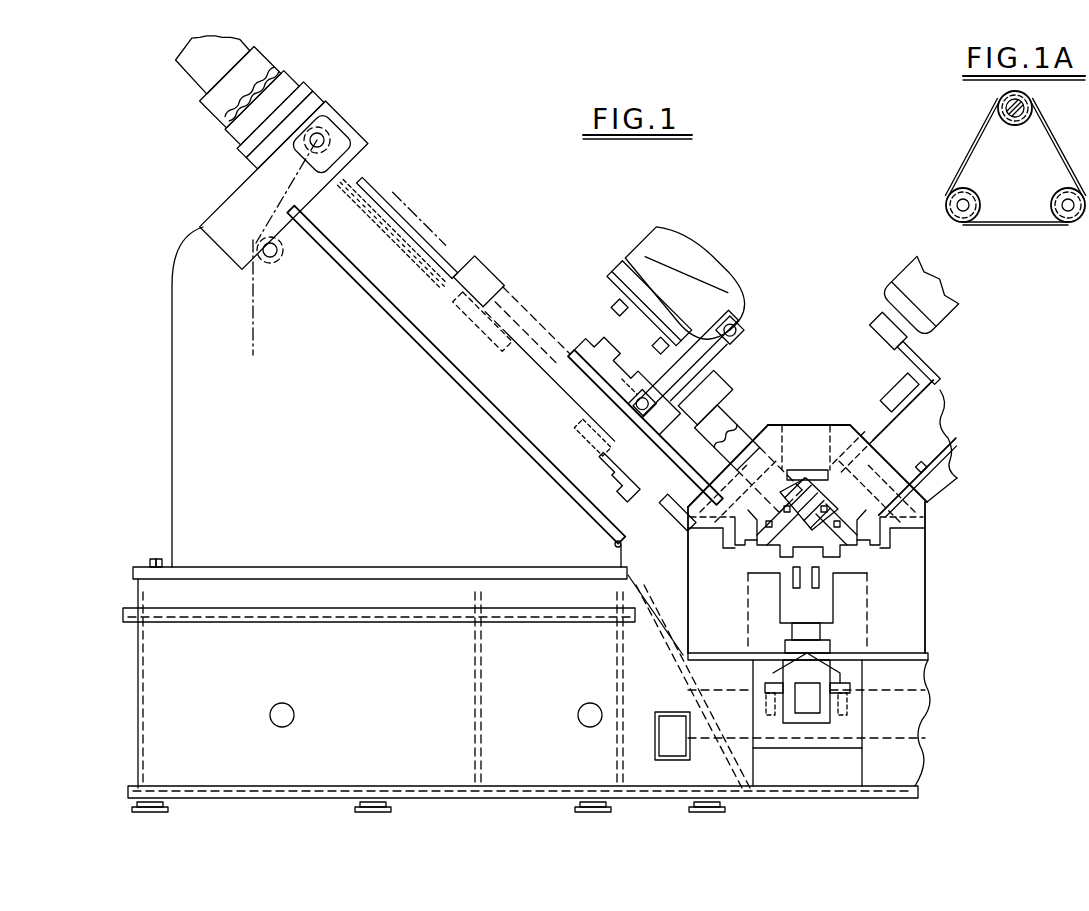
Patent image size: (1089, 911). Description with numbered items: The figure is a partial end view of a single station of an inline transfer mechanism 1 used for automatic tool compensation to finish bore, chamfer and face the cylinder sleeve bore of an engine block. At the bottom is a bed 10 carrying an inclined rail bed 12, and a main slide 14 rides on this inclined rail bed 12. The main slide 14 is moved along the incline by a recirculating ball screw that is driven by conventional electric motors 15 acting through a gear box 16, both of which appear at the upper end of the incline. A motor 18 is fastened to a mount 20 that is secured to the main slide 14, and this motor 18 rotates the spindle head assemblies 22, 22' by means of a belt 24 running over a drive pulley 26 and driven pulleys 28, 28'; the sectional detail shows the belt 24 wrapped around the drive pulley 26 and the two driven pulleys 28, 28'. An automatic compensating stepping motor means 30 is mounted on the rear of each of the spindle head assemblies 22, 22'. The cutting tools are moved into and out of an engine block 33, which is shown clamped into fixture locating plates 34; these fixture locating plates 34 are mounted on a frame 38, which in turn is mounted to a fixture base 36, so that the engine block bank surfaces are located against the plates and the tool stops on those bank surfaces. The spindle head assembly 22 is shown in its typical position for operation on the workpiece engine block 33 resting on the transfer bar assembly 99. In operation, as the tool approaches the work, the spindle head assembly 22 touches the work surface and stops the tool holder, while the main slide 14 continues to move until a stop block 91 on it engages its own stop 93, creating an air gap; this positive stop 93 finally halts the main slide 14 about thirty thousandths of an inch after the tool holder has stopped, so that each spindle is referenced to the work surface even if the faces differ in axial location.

In FIG. 1, the machine 1 is at (493, 346).
In FIG. 1, the bed 10 is at (935, 735).
In FIG. 1, the inclined rail bed 12 is at (410, 279).
In FIG. 1, the main slide 14 is at (490, 290).
In FIG. 1, the electric motors 15 is at (200, 70).
In FIG. 1, the gear box 16 is at (250, 132).
In FIG. 1, the motor 18 is at (677, 247).
In FIG. 1, the mount 20 is at (600, 343).
In FIG. 1, the spindle head assembly 22 is at (748, 461).
In FIG. 1, the spindle head assembly 22' is at (667, 535).
In FIG. 1, the belt 24 is at (718, 355).
In FIG. 1A, the belt 24 is at (1015, 161).
In FIG. 1, the drive pulley 26 is at (745, 325).
In FIG. 1A, the drive pulley 26 is at (1005, 108).
In FIG. 1, the driven pulley 28 is at (635, 393).
In FIG. 1A, the driven pulley 28 is at (1062, 235).
In FIG. 1A, the driven pulley 28' is at (927, 212).
In FIG. 1, the automatic compensating stepping motor means 30 is at (735, 383).
In FIG. 1, the engine block 33 is at (804, 470).
In FIG. 1, the fixture locating plates 34 is at (750, 507).
In FIG. 1, the fixture base 36 is at (915, 613).
In FIG. 1, the frame 38 is at (825, 432).
In FIG. 1, the stop block 91 is at (595, 454).
In FIG. 1, the stop 93 is at (610, 481).
In FIG. 1, the transfer bar assembly 99 is at (826, 580).